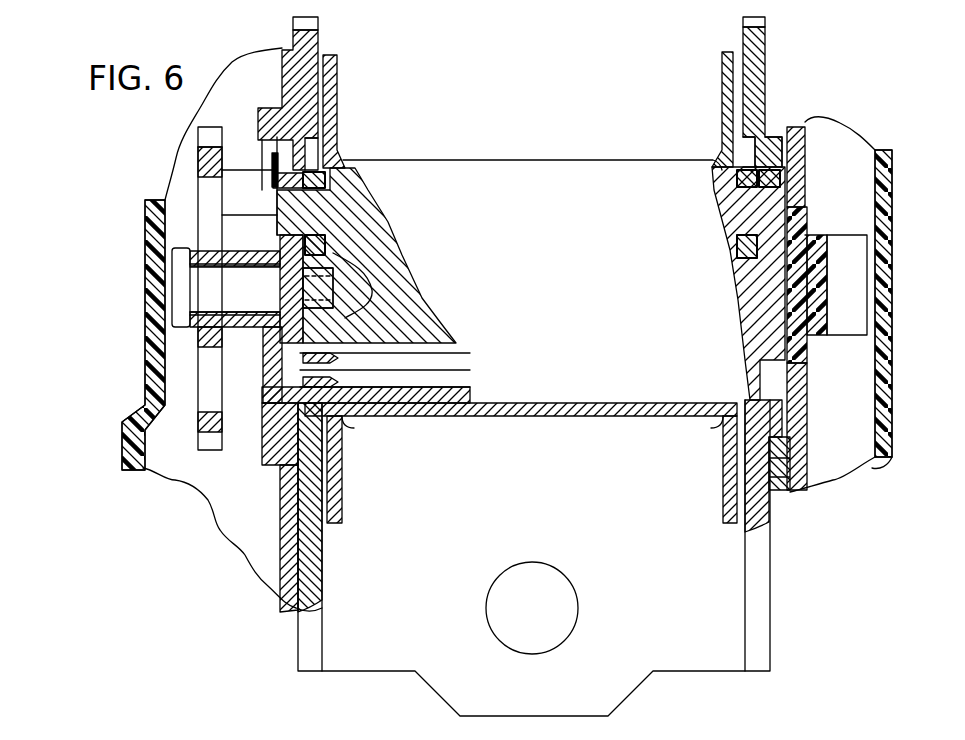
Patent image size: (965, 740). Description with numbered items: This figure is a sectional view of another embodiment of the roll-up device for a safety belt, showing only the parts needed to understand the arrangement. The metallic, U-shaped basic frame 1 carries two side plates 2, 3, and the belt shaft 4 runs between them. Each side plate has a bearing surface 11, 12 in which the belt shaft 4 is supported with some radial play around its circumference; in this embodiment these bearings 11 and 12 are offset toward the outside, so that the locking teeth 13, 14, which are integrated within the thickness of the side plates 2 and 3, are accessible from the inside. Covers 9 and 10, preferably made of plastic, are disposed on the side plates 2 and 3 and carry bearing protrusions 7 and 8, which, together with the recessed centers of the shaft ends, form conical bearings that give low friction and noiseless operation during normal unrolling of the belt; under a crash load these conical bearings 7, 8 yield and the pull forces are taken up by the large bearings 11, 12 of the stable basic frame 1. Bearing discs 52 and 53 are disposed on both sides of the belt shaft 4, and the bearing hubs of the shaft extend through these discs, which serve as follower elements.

The basic frame 1 is at (623, 681).
The side plate 2 is at (296, 38).
The side plate 3 is at (757, 43).
The belt shaft 4 is at (556, 392).
The bearing protrusion 7 is at (165, 292).
The bearing protrusion 8 is at (870, 283).
The cover 9 is at (126, 455).
The cover 10 is at (887, 423).
The bearing surface 11 is at (270, 462).
The bearing surface 12 is at (773, 143).
The locking teeth 13 is at (312, 147).
The locking teeth 14 is at (747, 150).
The bearing disc 52 is at (288, 248).
The bearing disc 53 is at (780, 173).